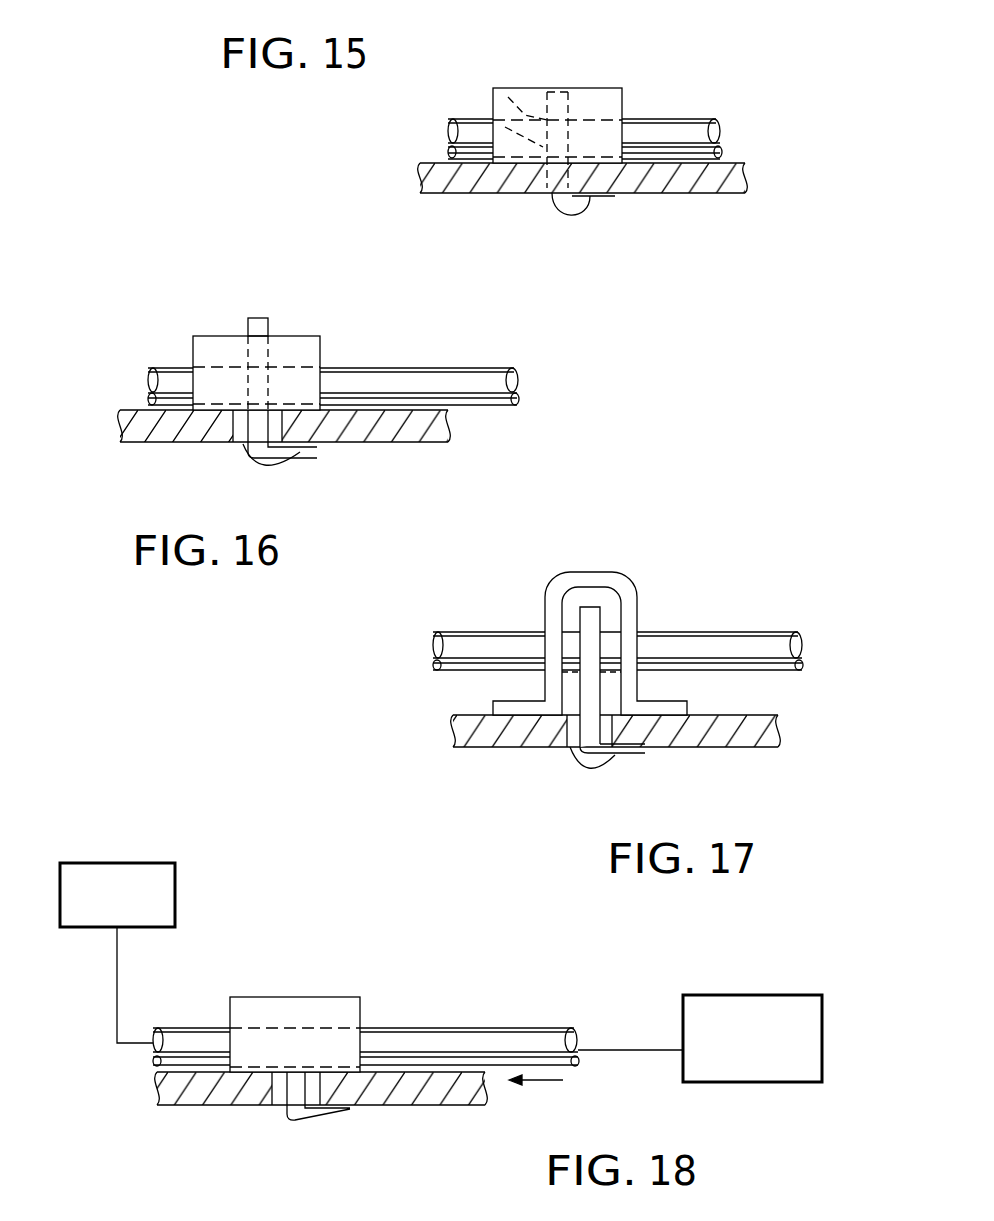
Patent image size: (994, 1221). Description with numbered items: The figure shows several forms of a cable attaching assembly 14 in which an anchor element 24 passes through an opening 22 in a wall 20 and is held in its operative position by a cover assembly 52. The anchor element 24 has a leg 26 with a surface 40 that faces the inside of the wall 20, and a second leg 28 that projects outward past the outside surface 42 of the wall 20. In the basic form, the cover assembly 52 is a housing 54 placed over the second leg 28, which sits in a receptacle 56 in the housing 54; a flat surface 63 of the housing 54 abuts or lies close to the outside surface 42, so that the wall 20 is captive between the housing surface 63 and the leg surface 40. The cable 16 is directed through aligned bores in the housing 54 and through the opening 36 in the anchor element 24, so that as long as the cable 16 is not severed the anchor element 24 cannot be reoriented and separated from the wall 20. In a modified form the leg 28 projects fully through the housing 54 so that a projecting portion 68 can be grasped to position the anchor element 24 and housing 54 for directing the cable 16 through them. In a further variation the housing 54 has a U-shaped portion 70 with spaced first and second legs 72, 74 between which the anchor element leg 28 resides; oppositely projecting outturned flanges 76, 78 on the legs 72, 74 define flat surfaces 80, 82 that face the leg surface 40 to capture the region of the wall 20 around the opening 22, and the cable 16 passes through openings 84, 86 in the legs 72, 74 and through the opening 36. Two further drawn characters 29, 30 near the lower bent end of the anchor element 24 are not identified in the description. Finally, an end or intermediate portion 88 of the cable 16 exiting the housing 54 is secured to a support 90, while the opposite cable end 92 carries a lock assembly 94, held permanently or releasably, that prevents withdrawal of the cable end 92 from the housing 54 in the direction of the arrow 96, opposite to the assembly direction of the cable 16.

In FIG. 15, the cable attaching assembly 14 is at (642, 93).
In FIG. 16, the cable attaching assembly 14 is at (357, 331).
In FIG. 18, the cable attaching assembly 14 is at (378, 989).
In FIG. 15, the cable 16 is at (693, 133).
In FIG. 16, the cable 16 is at (472, 383).
In FIG. 17, the cable 16 is at (760, 640).
In FIG. 18, the cable 16 is at (450, 1043).
In FIG. 15, the wall 20 is at (683, 190).
In FIG. 16, the wall 20 is at (284, 426).
In FIG. 17, the wall 20 is at (735, 738).
In FIG. 16, the opening 22 is at (265, 428).
In FIG. 17, the opening 22 is at (575, 752).
In FIG. 15, the anchor element 24 is at (552, 200).
In FIG. 16, the anchor element 24 is at (290, 462).
In FIG. 17, the anchor element 24 is at (598, 772).
In FIG. 18, the anchor element 24 is at (300, 1120).
In FIG. 15, the leg 26 is at (585, 205).
In FIG. 15, the second leg 28 is at (552, 88).
In FIG. 16, the second leg 28 is at (248, 330).
In FIG. 17, the second leg 28 is at (596, 580).
In FIG. 15, the fastener end 29 is at (556, 208).
In FIG. 16, the fastener end 29 is at (265, 463).
In FIG. 17, the fastener end 29 is at (540, 830).
In FIG. 18, the fastener end 29 is at (287, 1115).
In FIG. 15, the retaining clip 30 is at (615, 197).
In FIG. 16, the retaining clip 30 is at (317, 448).
In FIG. 17, the retaining clip 30 is at (648, 756).
In FIG. 18, the retaining clip 30 is at (350, 1110).
In FIG. 15, the opening 36 is at (500, 80).
In FIG. 17, the opening 36 is at (540, 657).
In FIG. 15, the surface 40 is at (600, 194).
In FIG. 17, the surface 40 is at (652, 753).
In FIG. 15, the outside surface 42 is at (728, 162).
In FIG. 15, the cover assembly 52 is at (606, 84).
In FIG. 16, the cover assembly 52 is at (293, 350).
In FIG. 17, the cover assembly 52 is at (625, 592).
In FIG. 15, the housing 54 is at (530, 88).
In FIG. 16, the housing 54 is at (230, 345).
In FIG. 17, the housing 54 is at (563, 585).
In FIG. 18, the housing 54 is at (293, 1012).
In FIG. 15, the receptacle 56 is at (493, 117).
In FIG. 15, the flat surface 63 is at (510, 165).
In FIG. 16, the projecting portion 68 is at (256, 318).
In FIG. 17, the U-shaped portion 70 is at (585, 572).
In FIG. 17, the first leg 72 is at (630, 620).
In FIG. 17, the second leg 74 is at (547, 610).
In FIG. 17, the outturned flange 76 is at (682, 702).
In FIG. 17, the outturned flange 78 is at (493, 705).
In FIG. 17, the flat surface 80 is at (660, 740).
In FIG. 17, the flat surface 82 is at (508, 715).
In FIG. 17, the opening 84 is at (640, 655).
In FIG. 17, the opening 86 is at (540, 641).
In FIG. 18, the intermediate portion 88 is at (118, 930).
In FIG. 18, the support 90 is at (147, 868).
In FIG. 18, the cable end 92 is at (683, 1035).
In FIG. 18, the lock assembly 94 is at (778, 1070).
In FIG. 18, the arrow 96 is at (545, 1085).